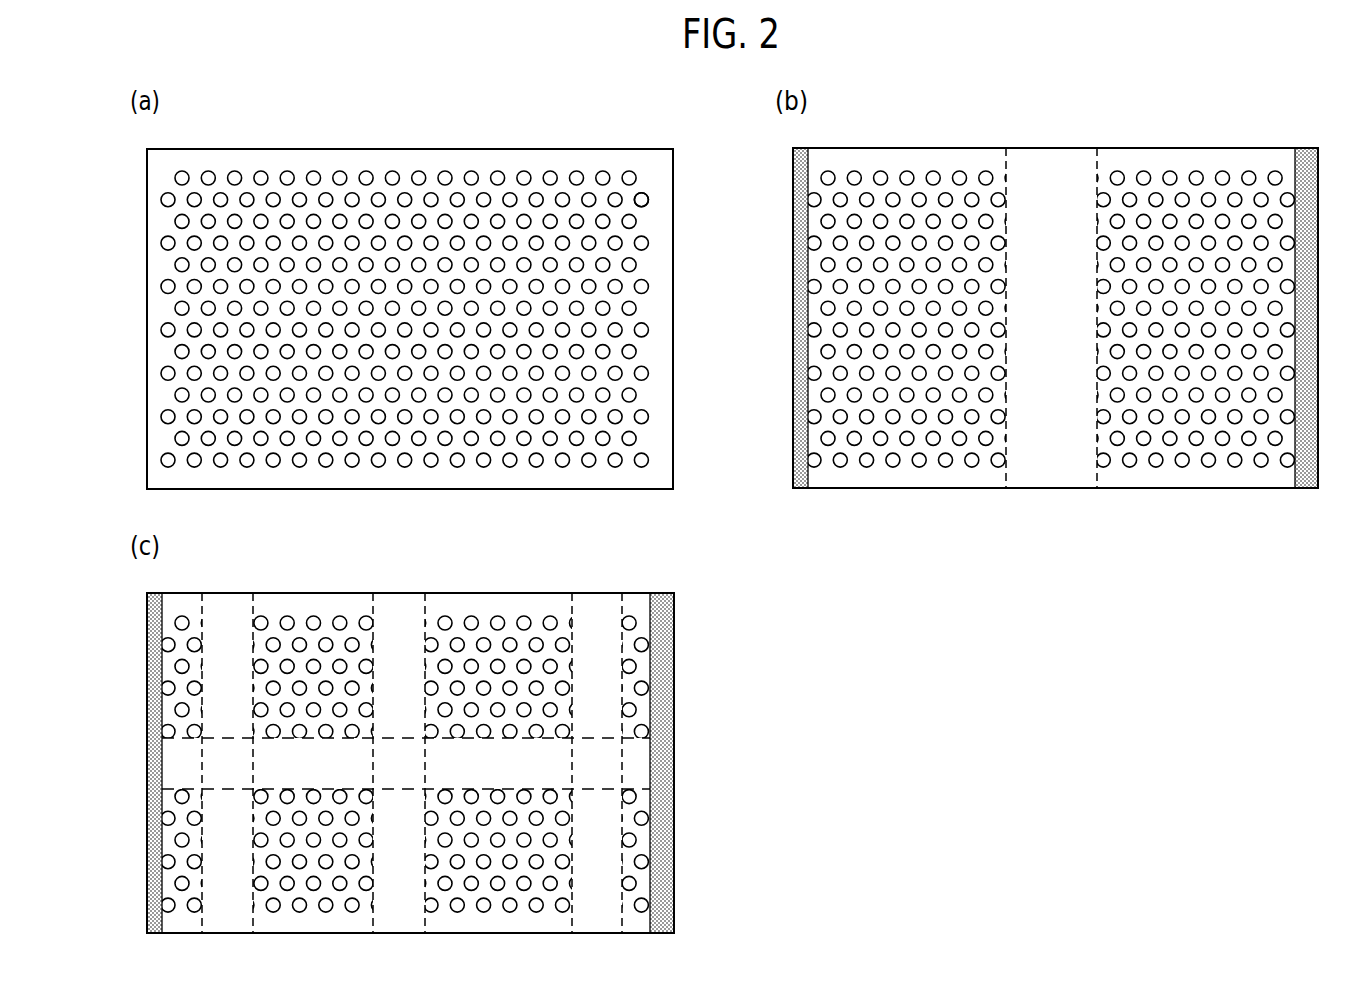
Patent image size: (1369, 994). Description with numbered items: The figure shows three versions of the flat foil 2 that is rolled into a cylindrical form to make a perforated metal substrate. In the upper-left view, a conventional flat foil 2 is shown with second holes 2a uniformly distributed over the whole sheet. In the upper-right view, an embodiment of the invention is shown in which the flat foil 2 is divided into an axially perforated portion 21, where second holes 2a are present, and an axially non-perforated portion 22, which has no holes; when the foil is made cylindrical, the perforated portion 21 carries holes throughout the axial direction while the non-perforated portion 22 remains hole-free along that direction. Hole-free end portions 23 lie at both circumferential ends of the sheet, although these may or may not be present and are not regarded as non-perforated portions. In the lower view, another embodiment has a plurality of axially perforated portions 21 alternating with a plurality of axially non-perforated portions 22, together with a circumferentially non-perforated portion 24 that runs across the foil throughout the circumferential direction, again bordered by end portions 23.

The flat foil 2 is at (511, 156).
The second holes 2a is at (650, 199).
The axially perforated portion 21 is at (913, 152).
The axially non-perforated portion 22 is at (1047, 152).
The end portion 23 is at (1306, 152).
The circumferentially non-perforated portion 24 is at (634, 764).